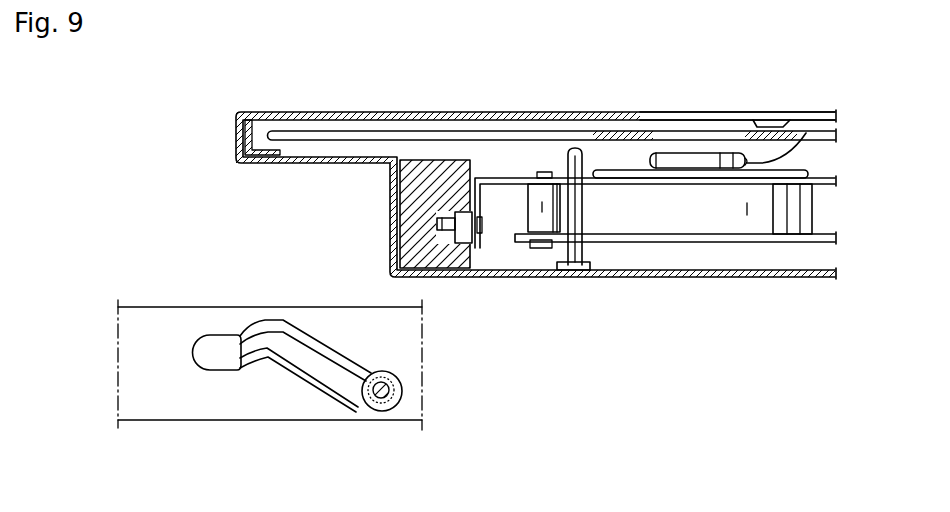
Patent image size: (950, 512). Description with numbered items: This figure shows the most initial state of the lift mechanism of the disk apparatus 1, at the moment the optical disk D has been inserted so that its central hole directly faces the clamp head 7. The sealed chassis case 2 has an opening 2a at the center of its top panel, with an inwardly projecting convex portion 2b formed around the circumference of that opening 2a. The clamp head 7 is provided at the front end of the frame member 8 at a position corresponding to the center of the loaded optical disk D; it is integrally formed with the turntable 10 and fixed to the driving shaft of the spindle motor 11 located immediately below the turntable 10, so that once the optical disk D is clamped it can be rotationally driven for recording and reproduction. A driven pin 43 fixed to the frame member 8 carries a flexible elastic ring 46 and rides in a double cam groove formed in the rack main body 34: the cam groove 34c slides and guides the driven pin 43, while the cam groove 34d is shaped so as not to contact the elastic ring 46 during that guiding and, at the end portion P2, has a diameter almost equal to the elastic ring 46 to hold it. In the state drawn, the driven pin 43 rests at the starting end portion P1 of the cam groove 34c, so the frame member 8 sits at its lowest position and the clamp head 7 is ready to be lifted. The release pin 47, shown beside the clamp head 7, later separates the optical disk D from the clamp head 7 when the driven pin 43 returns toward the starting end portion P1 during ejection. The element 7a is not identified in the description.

The disk apparatus 1 is at (329, 105).
The optical disk D is at (455, 112).
The chassis case 2 is at (538, 110).
The opening 2a is at (655, 117).
The convex portion 2b is at (753, 125).
The clamp head 7 is at (688, 158).
The clamper arm 7a is at (808, 128).
The turntable 10 is at (621, 168).
The frame member 8 is at (493, 178).
The spindle motor 11 is at (762, 211).
The rack main body 34 is at (412, 251).
The cam groove 34c is at (455, 214).
The cam groove 34d is at (463, 210).
The driven pin 43 is at (447, 230).
The elastic ring 46 is at (470, 238).
The release pin 47 is at (577, 208).
The starting end portion P1 is at (385, 360).
The end portion P2 is at (220, 375).